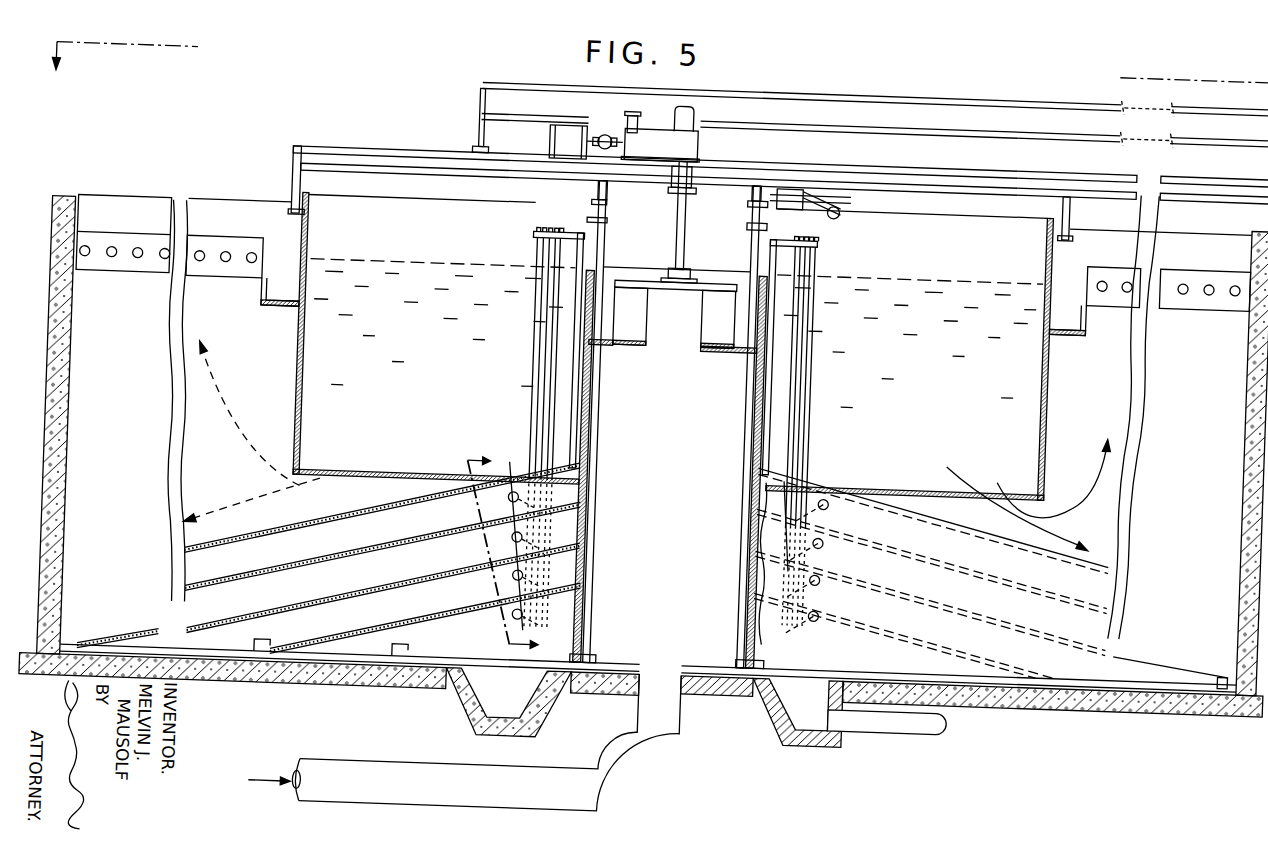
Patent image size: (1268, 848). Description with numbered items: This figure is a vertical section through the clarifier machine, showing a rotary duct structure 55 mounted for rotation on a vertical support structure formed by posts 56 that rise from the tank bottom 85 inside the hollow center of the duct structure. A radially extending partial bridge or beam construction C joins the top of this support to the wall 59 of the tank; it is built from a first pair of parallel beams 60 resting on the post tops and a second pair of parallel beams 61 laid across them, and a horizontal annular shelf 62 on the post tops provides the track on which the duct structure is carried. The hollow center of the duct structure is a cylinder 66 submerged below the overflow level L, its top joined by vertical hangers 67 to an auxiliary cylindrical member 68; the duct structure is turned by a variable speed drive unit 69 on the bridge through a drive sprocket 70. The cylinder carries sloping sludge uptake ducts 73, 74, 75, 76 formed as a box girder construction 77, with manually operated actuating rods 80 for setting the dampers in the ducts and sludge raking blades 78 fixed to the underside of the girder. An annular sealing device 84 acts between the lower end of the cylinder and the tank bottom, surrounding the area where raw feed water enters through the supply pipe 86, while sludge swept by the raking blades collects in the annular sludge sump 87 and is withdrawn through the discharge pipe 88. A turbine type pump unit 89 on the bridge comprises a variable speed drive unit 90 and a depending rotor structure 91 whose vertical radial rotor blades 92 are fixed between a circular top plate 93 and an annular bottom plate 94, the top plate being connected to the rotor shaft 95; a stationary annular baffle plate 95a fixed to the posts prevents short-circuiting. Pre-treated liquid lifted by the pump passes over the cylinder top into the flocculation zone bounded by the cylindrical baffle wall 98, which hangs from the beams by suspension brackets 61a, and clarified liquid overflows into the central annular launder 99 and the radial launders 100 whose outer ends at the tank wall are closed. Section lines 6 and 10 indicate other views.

The section line 6- 6 is at (659, 87).
The section line 10- 10 is at (519, 546).
The rotary duct structure 55 is at (828, 452).
The posts 56 is at (598, 421).
The wall of the tank 59 is at (1245, 462).
The first pair of parallel beams 60 is at (590, 191).
The second pair of parallel beams 61 is at (965, 174).
The suspension brackets 61a is at (1113, 203).
The horizontal annular shelf 62 is at (600, 222).
The cylinder 66 is at (762, 385).
The vertical hangers 67 is at (571, 292).
The auxiliary cylindrical member 68 is at (743, 208).
The variable speed drive unit 69 is at (838, 214).
The drive sprocket 70 is at (793, 208).
The sludge uptake duct 73 is at (325, 554).
The sludge uptake duct 74 is at (333, 592).
The sludge uptake duct 75 is at (341, 632).
The sludge uptake duct 76 is at (431, 649).
The box girder construction 77 is at (377, 496).
The sludge raking blades 78 is at (268, 663).
The actuating rods 80 is at (554, 395).
The annular sealing device 84 is at (600, 663).
The tank bottom 85 is at (706, 676).
The supply pipe 86 is at (673, 769).
The annular sludge sump 87 is at (502, 704).
The discharge pipe 88 is at (943, 725).
The turbine type pump unit 89 is at (698, 149).
The variable speed drive unit 90 is at (660, 124).
The rotor structure 91 is at (686, 272).
The rotor blades 92 is at (708, 329).
The circular top plate 93 is at (672, 288).
The annular bottom plate 94 is at (718, 352).
The rotor shaft 95 is at (670, 227).
The stationary annular baffle plate 95a is at (603, 349).
The cylindrical baffle wall 98 is at (296, 382).
The central annular launder 99 is at (255, 303).
The radial launders 100 is at (119, 266).
The overflow level L is at (424, 262).
The beam construction C is at (867, 156).